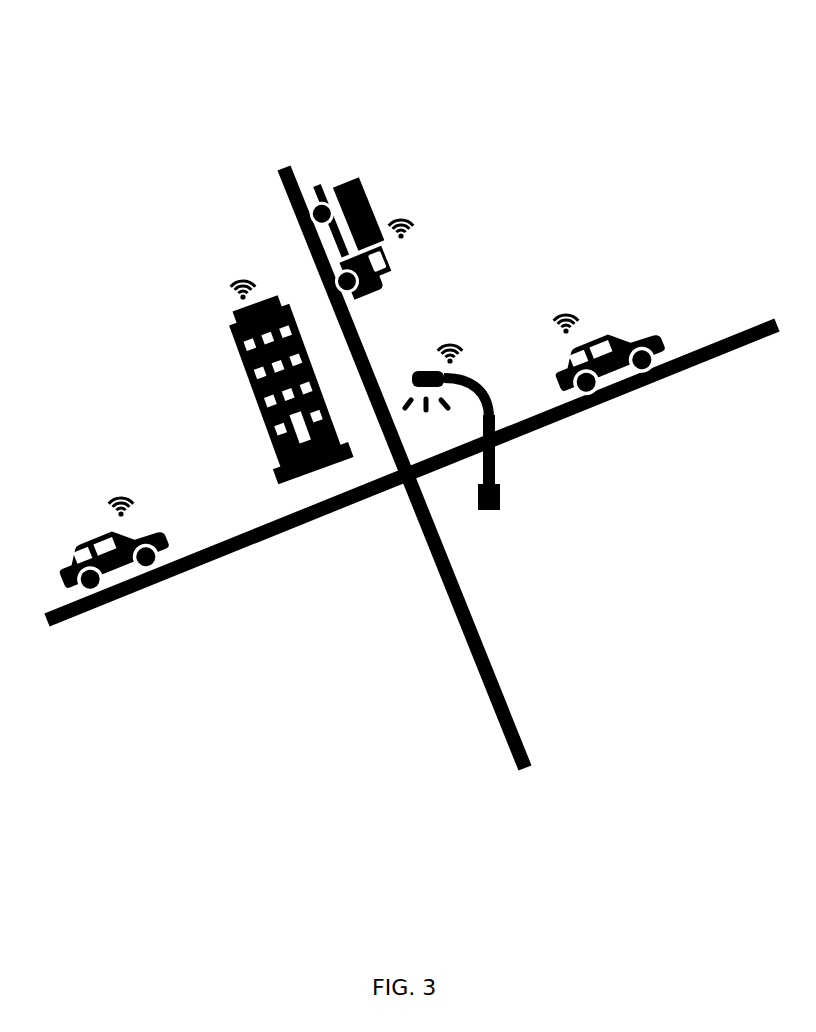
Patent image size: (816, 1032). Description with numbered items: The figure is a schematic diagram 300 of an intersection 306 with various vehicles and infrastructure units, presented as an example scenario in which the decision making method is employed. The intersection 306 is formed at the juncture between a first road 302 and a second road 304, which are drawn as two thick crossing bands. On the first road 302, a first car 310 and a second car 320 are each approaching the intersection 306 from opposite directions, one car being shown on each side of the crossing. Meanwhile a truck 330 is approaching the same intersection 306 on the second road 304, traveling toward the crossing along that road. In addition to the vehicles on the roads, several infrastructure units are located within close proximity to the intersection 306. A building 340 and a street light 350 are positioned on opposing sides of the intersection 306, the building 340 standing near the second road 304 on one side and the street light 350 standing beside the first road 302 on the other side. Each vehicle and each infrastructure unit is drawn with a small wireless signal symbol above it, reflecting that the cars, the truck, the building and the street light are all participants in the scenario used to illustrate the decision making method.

The schematic diagram 300 is at (395, 396).
The first road 302 is at (750, 343).
The second road 304 is at (483, 680).
The intersection 306 is at (402, 488).
The first car 310 is at (97, 523).
The second car 320 is at (612, 318).
The truck 330 is at (376, 197).
The building 340 is at (232, 339).
The street light 350 is at (500, 510).